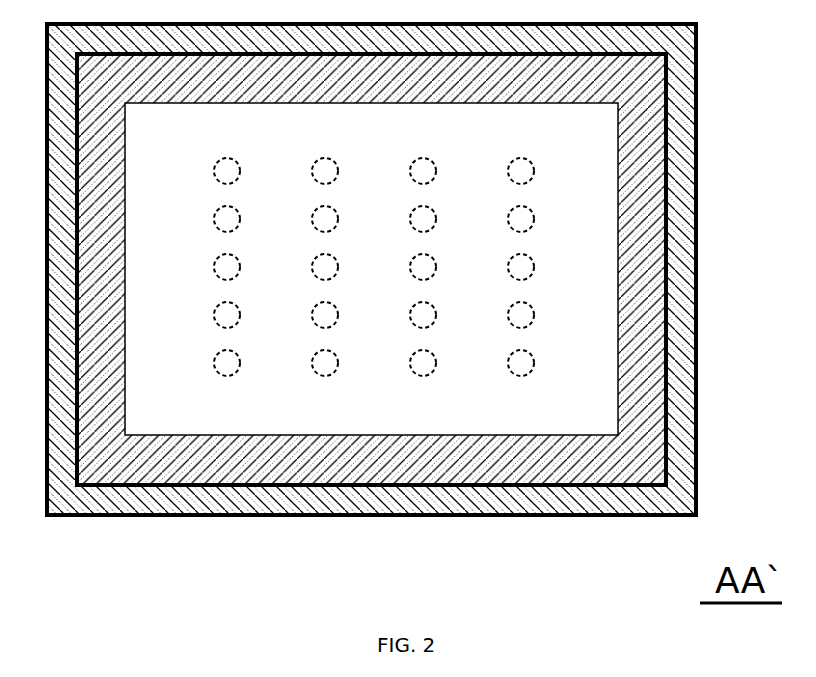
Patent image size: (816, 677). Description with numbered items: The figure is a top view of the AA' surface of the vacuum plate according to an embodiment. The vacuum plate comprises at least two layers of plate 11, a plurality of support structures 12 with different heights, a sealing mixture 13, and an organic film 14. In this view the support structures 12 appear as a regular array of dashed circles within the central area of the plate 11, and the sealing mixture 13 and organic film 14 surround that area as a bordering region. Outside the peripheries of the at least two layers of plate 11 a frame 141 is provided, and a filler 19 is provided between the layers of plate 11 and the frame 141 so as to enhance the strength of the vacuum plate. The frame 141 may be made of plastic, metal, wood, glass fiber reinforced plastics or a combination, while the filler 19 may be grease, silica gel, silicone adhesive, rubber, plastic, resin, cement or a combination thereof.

The plate 11 is at (578, 380).
The support structures 12 is at (520, 368).
The sealing mixture 13 is at (425, 467).
The organic film 14 is at (85, 488).
The frame 141 is at (132, 517).
The filler 19 is at (223, 503).